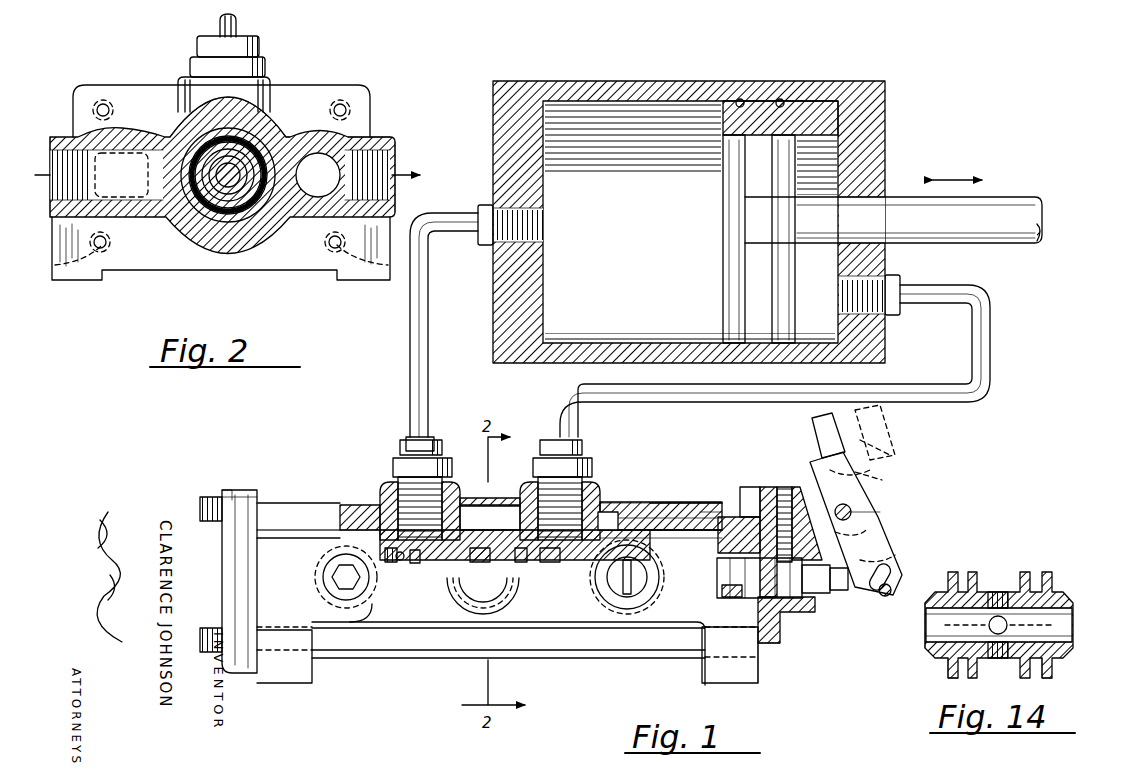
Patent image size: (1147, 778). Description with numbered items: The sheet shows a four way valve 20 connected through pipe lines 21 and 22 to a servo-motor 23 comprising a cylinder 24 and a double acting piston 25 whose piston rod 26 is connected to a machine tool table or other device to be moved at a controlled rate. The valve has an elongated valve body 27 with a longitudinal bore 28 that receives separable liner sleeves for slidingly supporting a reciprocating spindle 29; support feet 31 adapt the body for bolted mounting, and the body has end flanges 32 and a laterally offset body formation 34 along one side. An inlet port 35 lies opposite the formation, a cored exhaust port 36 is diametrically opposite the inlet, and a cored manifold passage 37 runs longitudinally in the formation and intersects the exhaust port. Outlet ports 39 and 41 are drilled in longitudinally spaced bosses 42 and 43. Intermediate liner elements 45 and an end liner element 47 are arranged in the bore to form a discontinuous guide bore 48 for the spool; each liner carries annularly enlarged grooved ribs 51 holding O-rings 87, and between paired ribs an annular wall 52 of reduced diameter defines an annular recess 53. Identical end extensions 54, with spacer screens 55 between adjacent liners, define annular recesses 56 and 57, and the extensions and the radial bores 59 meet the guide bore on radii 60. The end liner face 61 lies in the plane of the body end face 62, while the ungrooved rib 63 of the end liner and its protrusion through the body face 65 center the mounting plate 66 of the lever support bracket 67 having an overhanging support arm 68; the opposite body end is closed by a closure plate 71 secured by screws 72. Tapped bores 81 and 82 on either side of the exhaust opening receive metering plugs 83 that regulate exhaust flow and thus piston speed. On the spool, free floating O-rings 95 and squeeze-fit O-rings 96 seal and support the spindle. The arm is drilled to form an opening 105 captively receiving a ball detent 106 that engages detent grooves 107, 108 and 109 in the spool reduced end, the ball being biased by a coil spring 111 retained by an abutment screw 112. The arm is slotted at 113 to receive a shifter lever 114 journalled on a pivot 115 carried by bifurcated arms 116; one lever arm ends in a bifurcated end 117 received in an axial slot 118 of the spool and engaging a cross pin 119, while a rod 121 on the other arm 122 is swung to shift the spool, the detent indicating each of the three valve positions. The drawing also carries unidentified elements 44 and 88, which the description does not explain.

In FIG. 2, the four way valve 20 is at (338, 72).
In FIG. 1, the four way valve 20 is at (372, 662).
In FIG. 1, the pipe line 21 is at (408, 378).
In FIG. 2, the pipe line 22 is at (233, 24).
In FIG. 1, the pipe line 22 is at (662, 405).
In FIG. 1, the servo-motor 23 is at (638, 78).
In FIG. 1, the cylinder 24 is at (630, 246).
In FIG. 1, the double acting piston 25 is at (742, 230).
In FIG. 1, the piston rod 26 is at (1012, 210).
In FIG. 2, the valve body 27 is at (172, 125).
In FIG. 1, the valve body 27 is at (675, 512).
In FIG. 2, the bore 28 is at (262, 122).
In FIG. 1, the bore 28 is at (340, 538).
In FIG. 2, the spindle 29 is at (228, 182).
In FIG. 1, the spindle 29 is at (718, 578).
In FIG. 2, the support feet 31 is at (62, 283).
In FIG. 1, the support feet 31 is at (280, 685).
In FIG. 2, the end flanges 32 is at (126, 98).
In FIG. 1, the end flanges 32 is at (246, 490).
In FIG. 2, the body formation 34 is at (312, 130).
In FIG. 1, the body formation 34 is at (572, 632).
In FIG. 2, the inlet port 35 is at (60, 137).
In FIG. 2, the exhaust port 36 is at (376, 137).
In FIG. 1, the exhaust port 36 is at (455, 602).
In FIG. 2, the manifold passage 37 is at (331, 184).
In FIG. 2, the outlet port 39 is at (278, 224).
In FIG. 1, the outlet port 39 is at (385, 488).
In FIG. 1, the outlet port 41 is at (605, 500).
In FIG. 1, the boss 42 is at (405, 445).
In FIG. 2, the boss 43 is at (268, 80).
In FIG. 1, the boss 43 is at (594, 482).
In FIG. 2, the nut 44 is at (250, 57).
In FIG. 1, the nut 44 is at (443, 468).
In FIG. 1, the intermediate liner element 45 is at (640, 545).
In FIG. 14, the intermediate liner element 45 is at (922, 625).
In FIG. 1, the end liner element 47 is at (712, 515).
In FIG. 1, the guide bore 48 is at (552, 563).
In FIG. 14, the guide bore 48 is at (1010, 625).
In FIG. 2, the annularly enlarged rib 51 is at (190, 238).
In FIG. 1, the annularly enlarged rib 51 is at (372, 505).
In FIG. 14, the annularly enlarged rib 51 is at (948, 674).
In FIG. 1, the annular wall 52 is at (391, 563).
In FIG. 1, the annular recess 53 is at (416, 562).
In FIG. 14, the annular recess 53 is at (1008, 676).
In FIG. 1, the end extension 54 is at (480, 563).
In FIG. 14, the end extension 54 is at (928, 652).
In FIG. 1, the spacer screen 55 is at (490, 517).
In FIG. 1, the annular recess 56 is at (505, 505).
In FIG. 1, the annular recess 57 is at (342, 510).
In FIG. 1, the radial bore 59 is at (400, 560).
In FIG. 14, the radial bore 59 is at (985, 625).
In FIG. 14, the radii 60 is at (1005, 625).
In FIG. 1, the end face 61 is at (604, 521).
In FIG. 1, the end face 62 is at (224, 492).
In FIG. 1, the annular rib 63 is at (720, 517).
In FIG. 1, the body face 65 is at (762, 490).
In FIG. 1, the mounting plate 66 is at (762, 645).
In FIG. 1, the operating lever support bracket 67 is at (785, 638).
In FIG. 1, the support arm 68 is at (806, 470).
In FIG. 1, the closure plate 71 is at (232, 490).
In FIG. 2, the screws 72 is at (103, 103).
In FIG. 1, the screws 72 is at (202, 508).
In FIG. 1, the tapped bore 81 is at (368, 603).
In FIG. 1, the tapped bore 82 is at (650, 560).
In FIG. 1, the metering plug 83 is at (356, 584).
In FIG. 1, the O-ring 87 is at (398, 500).
In FIG. 1, the screw 88 is at (740, 500).
In FIG. 1, the O-ring 95 is at (520, 563).
In FIG. 1, the O-ring 96 is at (722, 592).
In FIG. 1, the drilled opening 105 is at (836, 510).
In FIG. 1, the ball detent 106 is at (810, 540).
In FIG. 1, the ball detent groove 107 is at (788, 612).
In FIG. 1, the ball detent groove 108 is at (815, 594).
In FIG. 1, the ball detent groove 109 is at (832, 592).
In FIG. 1, the coil spring 111 is at (836, 534).
In FIG. 1, the abutment screw 112 is at (784, 490).
In FIG. 1, the slot 113 is at (828, 472).
In FIG. 1, the shifter lever 114 is at (876, 500).
In FIG. 1, the pivot 115 is at (880, 513).
In FIG. 1, the bifurcated arms 116 is at (880, 460).
In FIG. 1, the bifurcated end 117 is at (885, 552).
In FIG. 1, the axial slot 118 is at (864, 595).
In FIG. 1, the cross pin 119 is at (888, 596).
In FIG. 1, the rod 121 is at (812, 420).
In FIG. 1, the other arm 122 is at (858, 420).